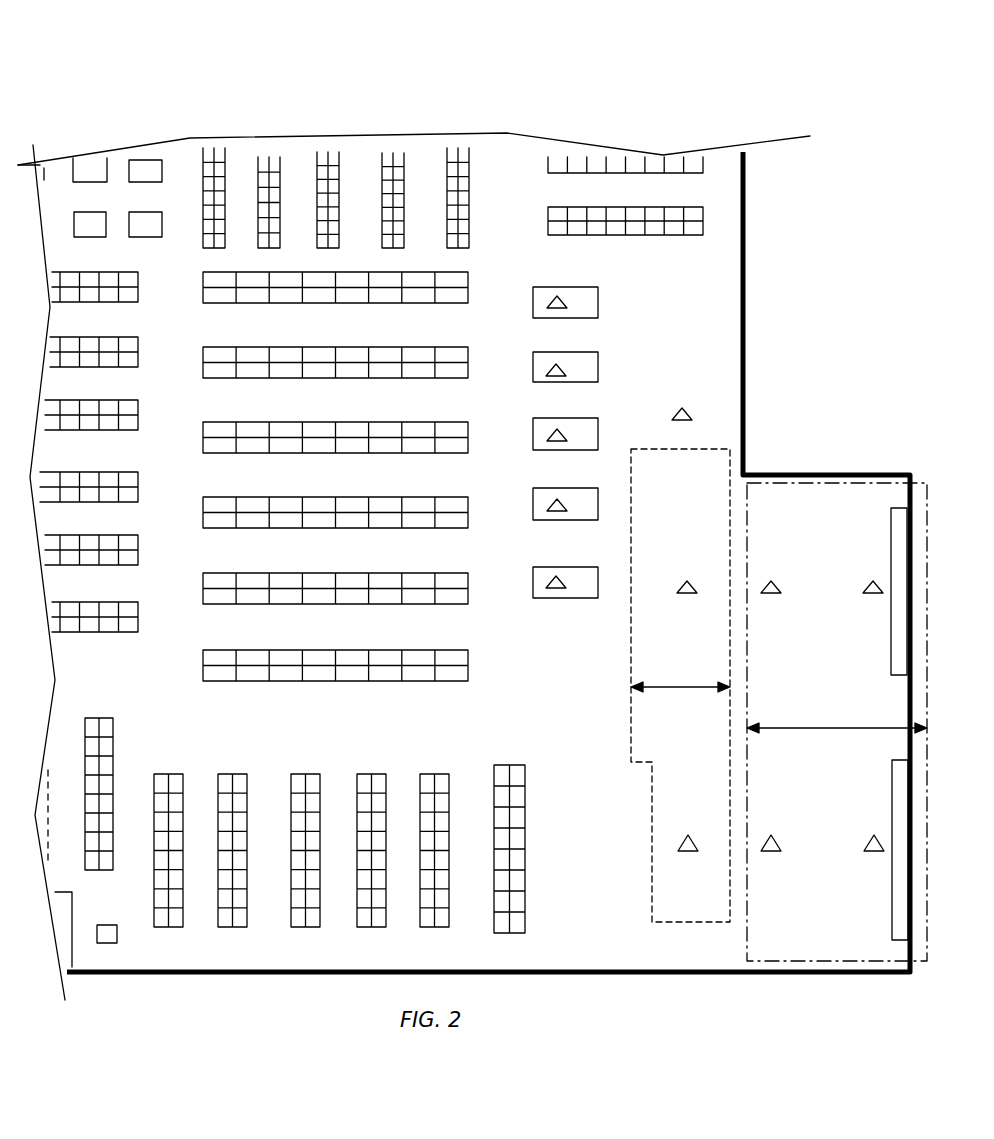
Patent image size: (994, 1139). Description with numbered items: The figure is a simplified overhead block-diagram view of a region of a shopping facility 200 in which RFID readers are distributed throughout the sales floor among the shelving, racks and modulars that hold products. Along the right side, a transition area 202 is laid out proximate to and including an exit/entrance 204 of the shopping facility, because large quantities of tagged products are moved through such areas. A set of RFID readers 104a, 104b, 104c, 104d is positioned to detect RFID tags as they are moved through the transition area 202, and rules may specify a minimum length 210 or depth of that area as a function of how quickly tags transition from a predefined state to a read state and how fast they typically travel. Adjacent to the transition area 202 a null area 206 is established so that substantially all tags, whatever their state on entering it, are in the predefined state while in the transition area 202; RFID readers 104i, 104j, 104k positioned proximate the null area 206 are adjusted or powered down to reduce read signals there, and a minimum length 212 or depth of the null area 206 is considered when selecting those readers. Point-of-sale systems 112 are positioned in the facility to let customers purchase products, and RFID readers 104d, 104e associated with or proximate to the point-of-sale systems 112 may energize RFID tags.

The shopping facility 200 is at (712, 85).
The transition area 202 is at (815, 905).
The exit/entrance 204 is at (913, 548).
The null area 206 is at (694, 898).
The minimum length 210 is at (775, 730).
The minimum length 212 is at (677, 688).
The point-of-sale system 112 is at (592, 367).
The RFID reader 104a is at (772, 853).
The RFID reader 104b is at (873, 853).
The RFID reader 104c is at (772, 580).
The RFID reader 104d is at (873, 580).
The RFID reader 104e is at (550, 372).
The RFID reader 104i is at (686, 853).
The RFID reader 104j is at (683, 591).
The RFID reader 104k is at (692, 413).